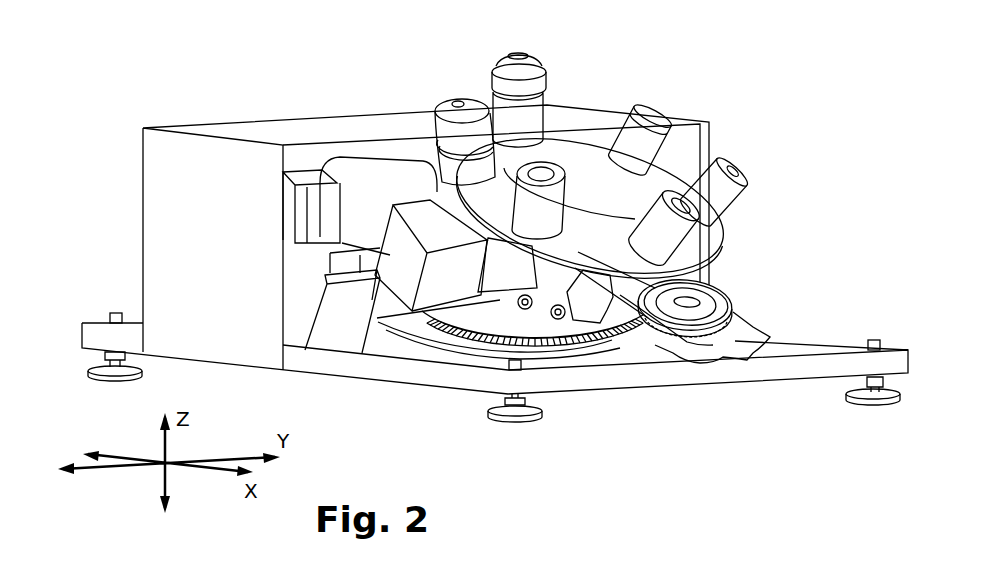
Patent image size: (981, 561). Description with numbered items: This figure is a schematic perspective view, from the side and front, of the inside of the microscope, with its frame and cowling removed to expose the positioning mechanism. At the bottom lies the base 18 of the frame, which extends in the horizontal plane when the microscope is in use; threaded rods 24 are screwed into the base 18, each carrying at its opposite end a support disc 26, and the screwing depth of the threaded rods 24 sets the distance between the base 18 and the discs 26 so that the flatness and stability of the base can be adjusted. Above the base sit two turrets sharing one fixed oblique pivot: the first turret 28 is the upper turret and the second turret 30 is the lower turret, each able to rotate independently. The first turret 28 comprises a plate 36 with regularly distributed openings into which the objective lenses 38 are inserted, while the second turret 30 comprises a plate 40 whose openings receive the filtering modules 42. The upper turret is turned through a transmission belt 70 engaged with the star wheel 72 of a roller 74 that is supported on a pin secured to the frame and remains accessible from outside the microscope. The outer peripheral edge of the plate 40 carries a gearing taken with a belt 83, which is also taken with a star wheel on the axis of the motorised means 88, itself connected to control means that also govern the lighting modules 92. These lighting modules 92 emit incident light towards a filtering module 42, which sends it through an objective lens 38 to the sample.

The base 18 is at (604, 382).
The threaded rods 24 is at (115, 313).
The support disc 26 is at (108, 375).
The first turret 28 is at (740, 229).
The second turret 30 is at (610, 380).
The plate 36 is at (572, 153).
The objective lenses 38 is at (447, 118).
The plate 40 is at (568, 325).
The filtering modules 42 is at (492, 322).
The transmission belt 70 is at (652, 347).
The star wheel 72 is at (735, 311).
The roller 74 is at (703, 347).
The belt 83 is at (503, 322).
The motorised means 88 is at (405, 273).
The lighting modules 92 is at (352, 155).